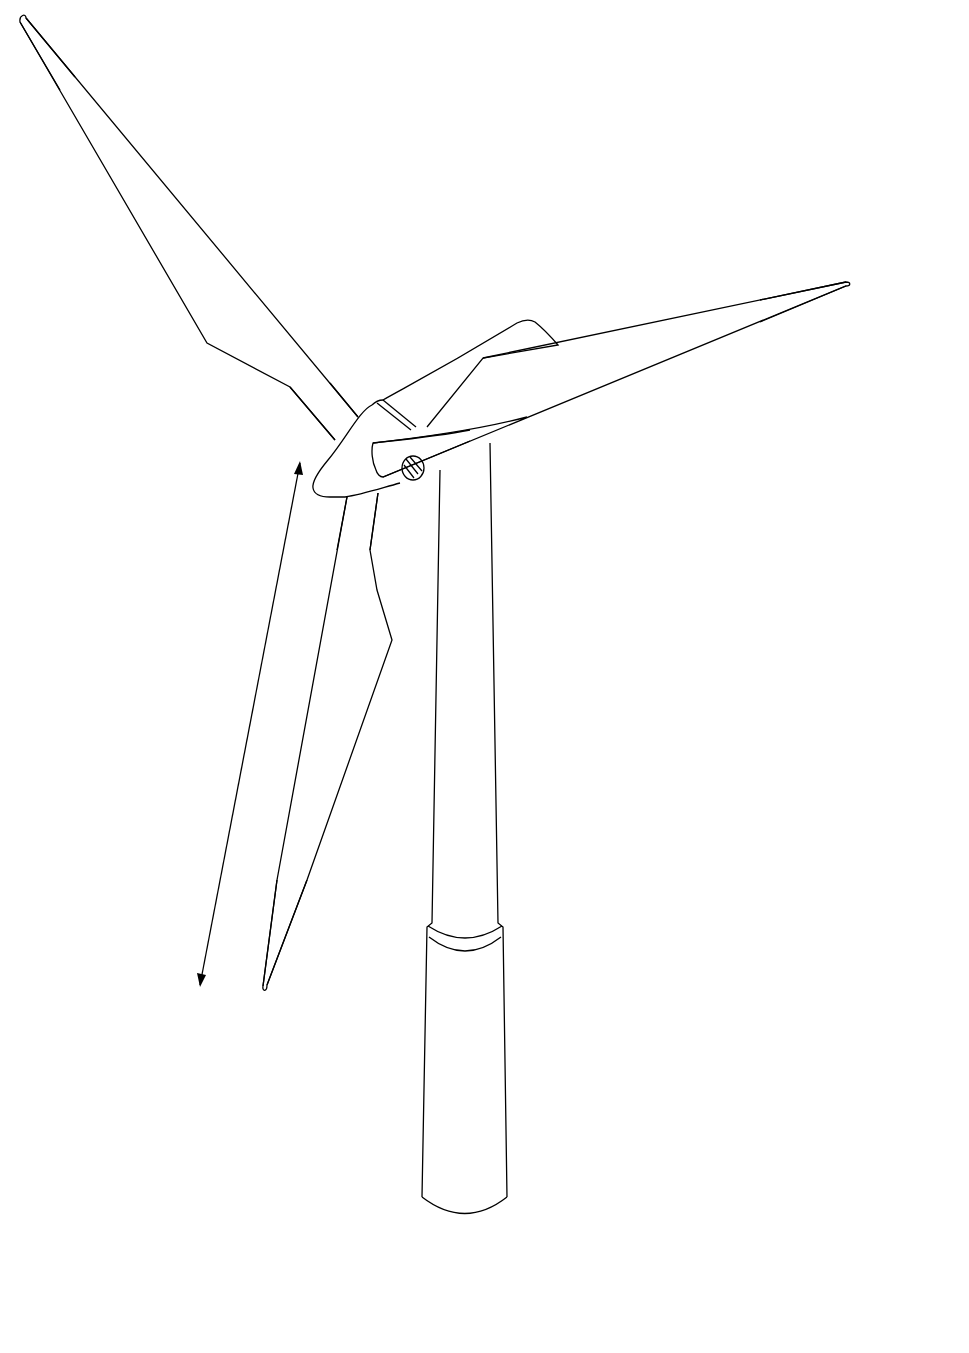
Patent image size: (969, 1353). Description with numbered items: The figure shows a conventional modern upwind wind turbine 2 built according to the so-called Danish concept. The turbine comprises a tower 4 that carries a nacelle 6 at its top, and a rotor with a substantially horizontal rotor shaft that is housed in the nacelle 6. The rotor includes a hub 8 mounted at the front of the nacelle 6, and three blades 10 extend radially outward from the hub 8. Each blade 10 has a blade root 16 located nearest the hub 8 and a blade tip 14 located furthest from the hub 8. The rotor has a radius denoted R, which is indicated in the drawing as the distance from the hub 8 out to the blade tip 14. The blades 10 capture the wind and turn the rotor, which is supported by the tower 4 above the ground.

The wind turbine 2 is at (600, 767).
The tower 4 is at (483, 687).
The nacelle 6 is at (424, 385).
The hub 8 is at (322, 462).
The blade 10 is at (222, 320).
The blade tip 14 is at (68, 78).
The blade root 16 is at (346, 425).